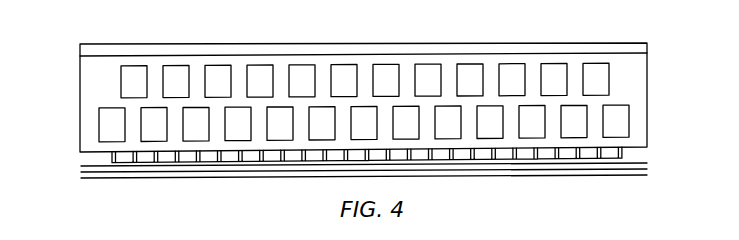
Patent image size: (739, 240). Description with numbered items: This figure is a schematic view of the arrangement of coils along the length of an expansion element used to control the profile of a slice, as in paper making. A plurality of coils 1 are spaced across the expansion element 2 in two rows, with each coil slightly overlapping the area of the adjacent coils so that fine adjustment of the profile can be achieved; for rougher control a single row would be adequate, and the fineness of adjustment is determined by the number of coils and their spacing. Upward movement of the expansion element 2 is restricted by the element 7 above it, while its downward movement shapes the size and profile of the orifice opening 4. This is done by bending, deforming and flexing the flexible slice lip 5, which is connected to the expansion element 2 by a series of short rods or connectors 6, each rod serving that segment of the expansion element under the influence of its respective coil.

The coils 1 is at (253, 66).
The expansion element 2 is at (648, 90).
The orifice opening 4 is at (654, 169).
The slice lip 5 is at (523, 170).
The short rods or connectors 6 is at (112, 158).
The element 7 is at (582, 43).